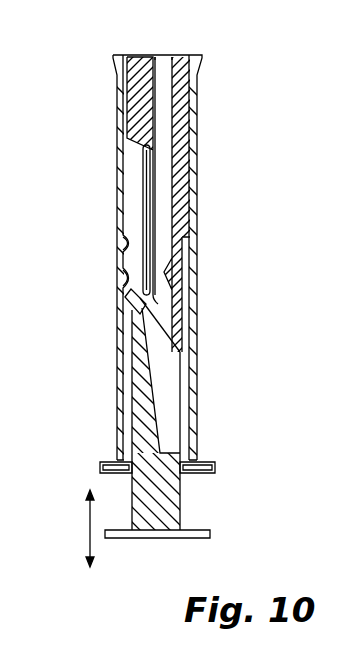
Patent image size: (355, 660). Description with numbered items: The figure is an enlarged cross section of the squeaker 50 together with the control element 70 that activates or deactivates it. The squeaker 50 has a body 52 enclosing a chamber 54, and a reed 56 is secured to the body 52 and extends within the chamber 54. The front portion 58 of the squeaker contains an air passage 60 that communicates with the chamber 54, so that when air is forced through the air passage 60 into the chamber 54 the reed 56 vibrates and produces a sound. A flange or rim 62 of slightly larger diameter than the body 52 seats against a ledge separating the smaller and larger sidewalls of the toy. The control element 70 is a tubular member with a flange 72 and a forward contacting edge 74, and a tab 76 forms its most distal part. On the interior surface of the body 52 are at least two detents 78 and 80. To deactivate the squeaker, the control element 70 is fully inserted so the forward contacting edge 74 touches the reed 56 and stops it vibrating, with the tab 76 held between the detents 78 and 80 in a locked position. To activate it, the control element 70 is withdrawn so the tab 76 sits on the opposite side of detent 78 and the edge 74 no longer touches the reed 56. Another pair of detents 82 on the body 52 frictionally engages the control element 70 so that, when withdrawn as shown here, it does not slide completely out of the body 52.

The squeaker 50 is at (230, 208).
The body 52 is at (197, 120).
The chamber 54 is at (143, 172).
The reed 56 is at (146, 223).
The front portion 58 is at (151, 76).
The air passage 60 is at (160, 80).
The flange or rim 62 is at (215, 468).
The control element 70 is at (172, 500).
The flange 72 is at (118, 538).
The forward contacting edge 74 is at (150, 306).
The tab 76 is at (134, 306).
The detent 78 is at (126, 283).
The detent 80 is at (125, 244).
The detents 82 is at (101, 465).